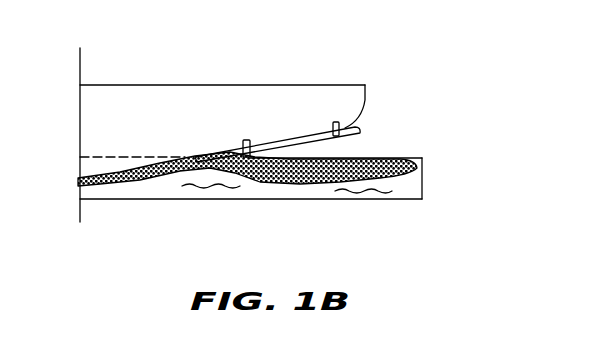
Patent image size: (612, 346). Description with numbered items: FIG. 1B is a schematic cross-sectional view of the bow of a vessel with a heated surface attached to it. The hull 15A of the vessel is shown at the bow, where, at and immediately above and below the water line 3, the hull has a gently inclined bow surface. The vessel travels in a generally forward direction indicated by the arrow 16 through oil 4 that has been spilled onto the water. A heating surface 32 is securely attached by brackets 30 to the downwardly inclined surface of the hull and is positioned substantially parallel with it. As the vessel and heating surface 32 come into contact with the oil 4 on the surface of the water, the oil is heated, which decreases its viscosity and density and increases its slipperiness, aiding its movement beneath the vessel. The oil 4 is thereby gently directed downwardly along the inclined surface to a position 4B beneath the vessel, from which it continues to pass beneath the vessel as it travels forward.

The water line 3 is at (414, 160).
The oil 4 is at (380, 158).
The position beneath the vessel 4B is at (137, 168).
The hull 15A is at (202, 105).
The arrow 16 is at (160, 127).
The brackets 30 is at (245, 140).
The heating surface 32 is at (296, 150).